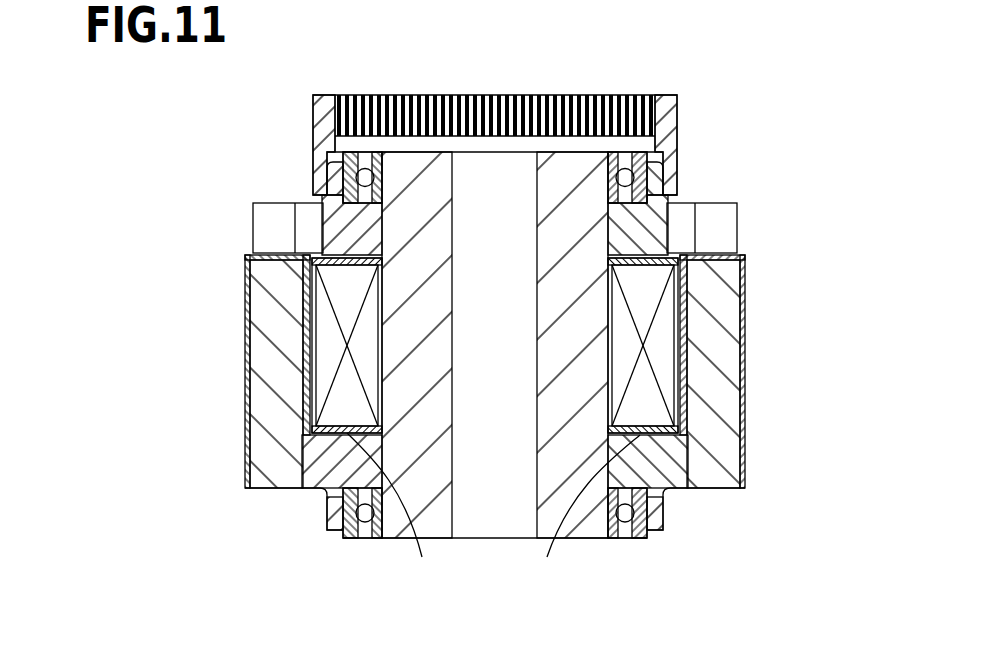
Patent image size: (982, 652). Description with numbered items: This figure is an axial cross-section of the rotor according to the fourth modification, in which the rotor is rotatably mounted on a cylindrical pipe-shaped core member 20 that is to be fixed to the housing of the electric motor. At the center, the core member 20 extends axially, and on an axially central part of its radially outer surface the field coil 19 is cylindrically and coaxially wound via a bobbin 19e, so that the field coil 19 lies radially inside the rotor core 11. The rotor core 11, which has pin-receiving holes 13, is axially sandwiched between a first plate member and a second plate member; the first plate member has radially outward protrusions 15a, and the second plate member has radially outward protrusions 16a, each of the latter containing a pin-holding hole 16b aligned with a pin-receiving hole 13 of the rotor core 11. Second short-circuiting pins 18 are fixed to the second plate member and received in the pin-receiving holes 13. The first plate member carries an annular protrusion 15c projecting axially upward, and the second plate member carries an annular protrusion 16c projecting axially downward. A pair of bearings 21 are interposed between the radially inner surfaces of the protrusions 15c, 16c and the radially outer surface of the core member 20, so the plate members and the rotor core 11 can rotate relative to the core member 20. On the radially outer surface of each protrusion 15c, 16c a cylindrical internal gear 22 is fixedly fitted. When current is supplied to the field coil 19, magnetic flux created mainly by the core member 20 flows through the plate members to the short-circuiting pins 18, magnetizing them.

The rotor core 11 is at (238, 377).
The pin-receiving holes 13 is at (257, 277).
The protrusions 15a is at (258, 232).
The annular protrusion 15c is at (331, 182).
The protrusions 16a is at (245, 465).
The pin-holding holes 16b is at (300, 457).
The annular protrusion 16c is at (333, 508).
The second short-circuiting pins 18 is at (267, 328).
The field coil 19 is at (325, 357).
The bobbin 19e is at (493, 513).
The core member 20 is at (430, 185).
The bearings 21 is at (348, 157).
The internal gear 22 is at (325, 112).